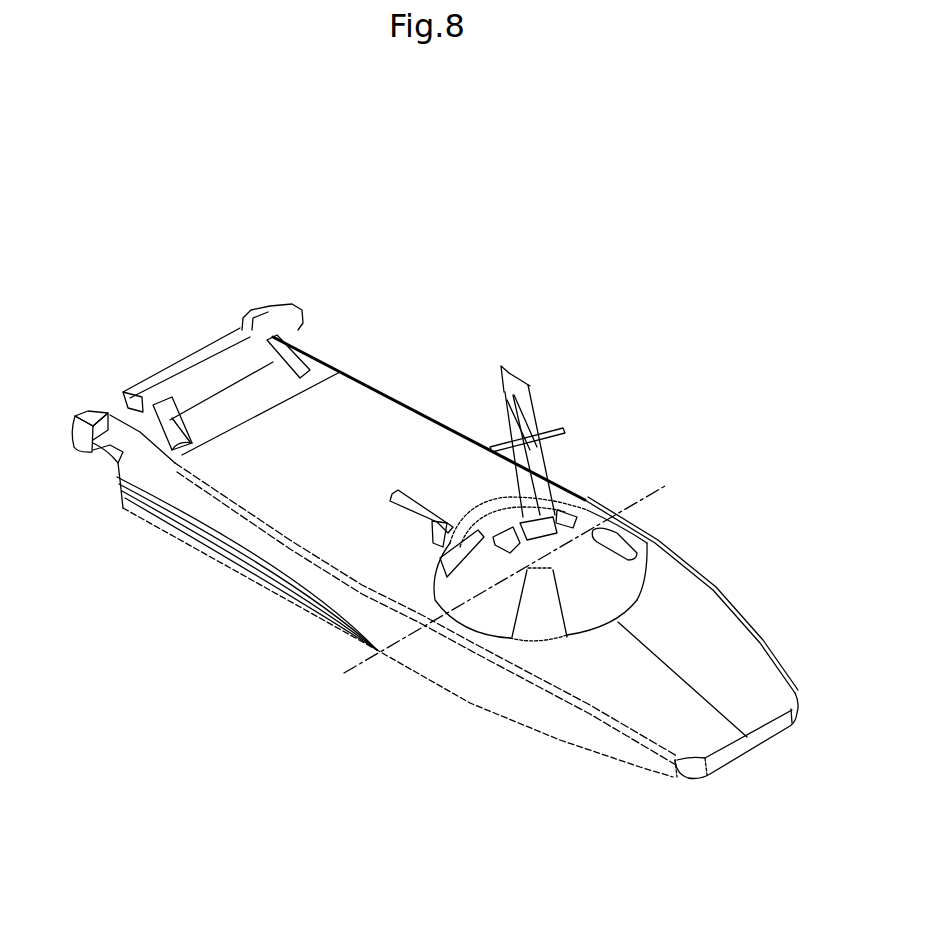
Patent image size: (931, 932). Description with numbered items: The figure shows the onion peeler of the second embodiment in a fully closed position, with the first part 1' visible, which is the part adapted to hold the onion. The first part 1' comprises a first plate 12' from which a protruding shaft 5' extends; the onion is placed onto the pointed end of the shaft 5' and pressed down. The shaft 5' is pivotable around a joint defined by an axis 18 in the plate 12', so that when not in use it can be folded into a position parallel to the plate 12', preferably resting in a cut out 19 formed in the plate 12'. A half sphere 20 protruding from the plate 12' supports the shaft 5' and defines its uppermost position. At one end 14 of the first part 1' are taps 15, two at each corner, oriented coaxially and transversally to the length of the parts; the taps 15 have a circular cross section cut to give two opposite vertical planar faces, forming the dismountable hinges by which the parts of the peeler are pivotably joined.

The first part 1' is at (247, 594).
The protruding shaft 5' is at (564, 453).
The first plate 12' is at (482, 621).
The end 14 is at (333, 376).
The taps 15 is at (287, 320).
The axis 18 is at (665, 488).
The cut out 19 is at (408, 500).
The half sphere 20 is at (607, 587).